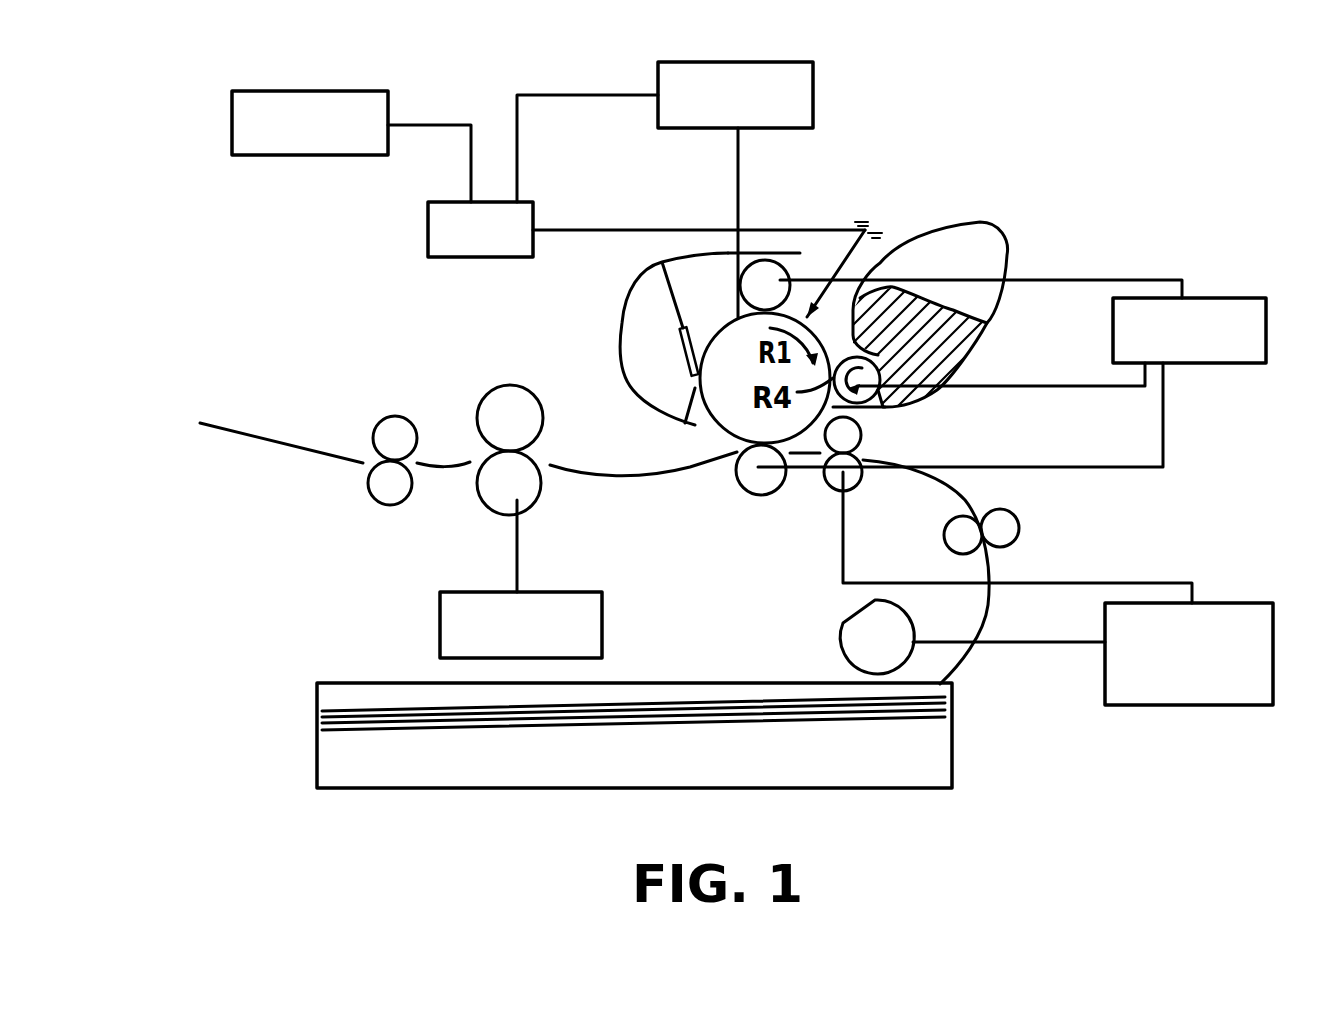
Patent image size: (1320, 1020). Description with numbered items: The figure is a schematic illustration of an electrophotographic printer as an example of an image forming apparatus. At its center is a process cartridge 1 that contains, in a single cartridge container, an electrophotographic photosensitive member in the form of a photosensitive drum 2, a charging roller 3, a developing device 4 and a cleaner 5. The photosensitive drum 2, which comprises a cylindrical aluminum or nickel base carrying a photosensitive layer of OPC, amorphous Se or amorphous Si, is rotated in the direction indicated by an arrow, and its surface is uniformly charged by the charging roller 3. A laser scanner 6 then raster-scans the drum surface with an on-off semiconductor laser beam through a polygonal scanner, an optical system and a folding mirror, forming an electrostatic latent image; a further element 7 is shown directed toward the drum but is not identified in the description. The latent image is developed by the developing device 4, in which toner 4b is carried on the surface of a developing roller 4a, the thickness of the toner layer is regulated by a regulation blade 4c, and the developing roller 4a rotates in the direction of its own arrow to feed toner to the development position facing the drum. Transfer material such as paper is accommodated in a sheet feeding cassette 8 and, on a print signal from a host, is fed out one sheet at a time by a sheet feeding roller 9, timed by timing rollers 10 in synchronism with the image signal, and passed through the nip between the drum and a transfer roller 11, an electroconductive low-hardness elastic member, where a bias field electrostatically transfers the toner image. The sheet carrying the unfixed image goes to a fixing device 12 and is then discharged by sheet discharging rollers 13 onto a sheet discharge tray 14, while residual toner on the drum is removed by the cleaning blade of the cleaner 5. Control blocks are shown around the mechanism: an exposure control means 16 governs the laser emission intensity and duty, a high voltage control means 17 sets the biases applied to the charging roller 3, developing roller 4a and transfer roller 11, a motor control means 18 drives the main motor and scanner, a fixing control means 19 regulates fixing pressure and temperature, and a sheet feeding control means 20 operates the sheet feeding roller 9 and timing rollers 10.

The process cartridge 1 is at (760, 252).
The photosensitive drum 2 is at (722, 325).
The charging roller 3 is at (783, 260).
The developing device 4 is at (1013, 268).
The developing roller 4a is at (873, 410).
The toner 4b is at (942, 342).
The regulation blade 4c is at (912, 303).
The cleaner 5 is at (633, 347).
The laser scanner 6 is at (535, 208).
The static eliminator 7 is at (880, 226).
The sheet feeding cassette 8 is at (953, 694).
The sheet feeding roller 9 is at (840, 646).
The timing rollers 10 is at (828, 490).
The transfer roller 11 is at (752, 493).
The fixing device 12 is at (490, 500).
The sheet discharging rollers 13 is at (380, 495).
The sheet discharge tray 14 is at (310, 450).
The exposure control means 16 is at (318, 91).
The high voltage control means 17 is at (1237, 298).
The motor control means 18 is at (748, 62).
The fixing control means 19 is at (567, 592).
The sheet feeding control means 20 is at (1245, 603).